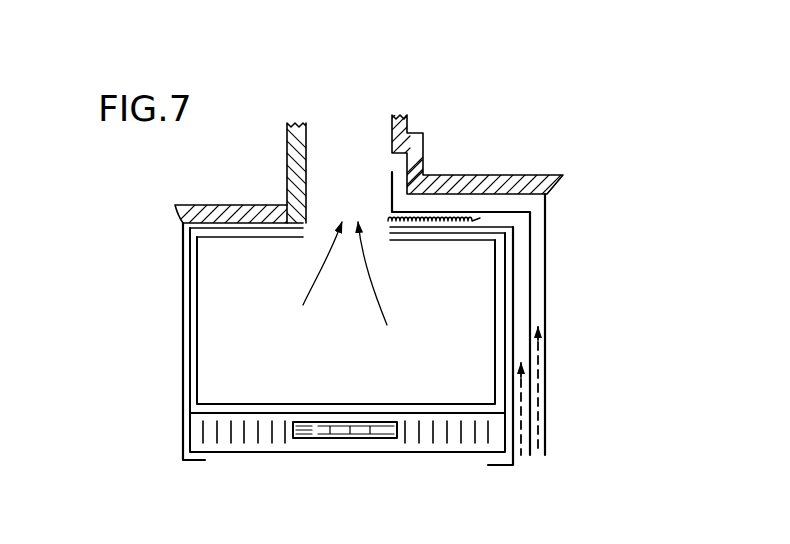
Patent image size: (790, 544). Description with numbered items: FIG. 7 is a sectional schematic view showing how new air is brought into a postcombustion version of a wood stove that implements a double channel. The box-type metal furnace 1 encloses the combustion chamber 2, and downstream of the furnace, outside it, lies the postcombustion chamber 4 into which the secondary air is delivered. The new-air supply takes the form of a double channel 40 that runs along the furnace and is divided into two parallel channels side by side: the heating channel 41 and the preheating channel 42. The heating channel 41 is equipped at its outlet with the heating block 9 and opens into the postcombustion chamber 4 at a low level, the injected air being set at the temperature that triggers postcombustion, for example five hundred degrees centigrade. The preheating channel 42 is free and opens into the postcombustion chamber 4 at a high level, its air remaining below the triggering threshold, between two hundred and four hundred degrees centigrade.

The metal furnace 1 is at (155, 410).
The combustion chamber 2 is at (228, 343).
The postcombustion chamber 4 is at (348, 155).
The heating block 9 is at (432, 216).
The double channel 40 is at (549, 210).
The heating channel 41 is at (515, 353).
The preheating channel 42 is at (535, 288).